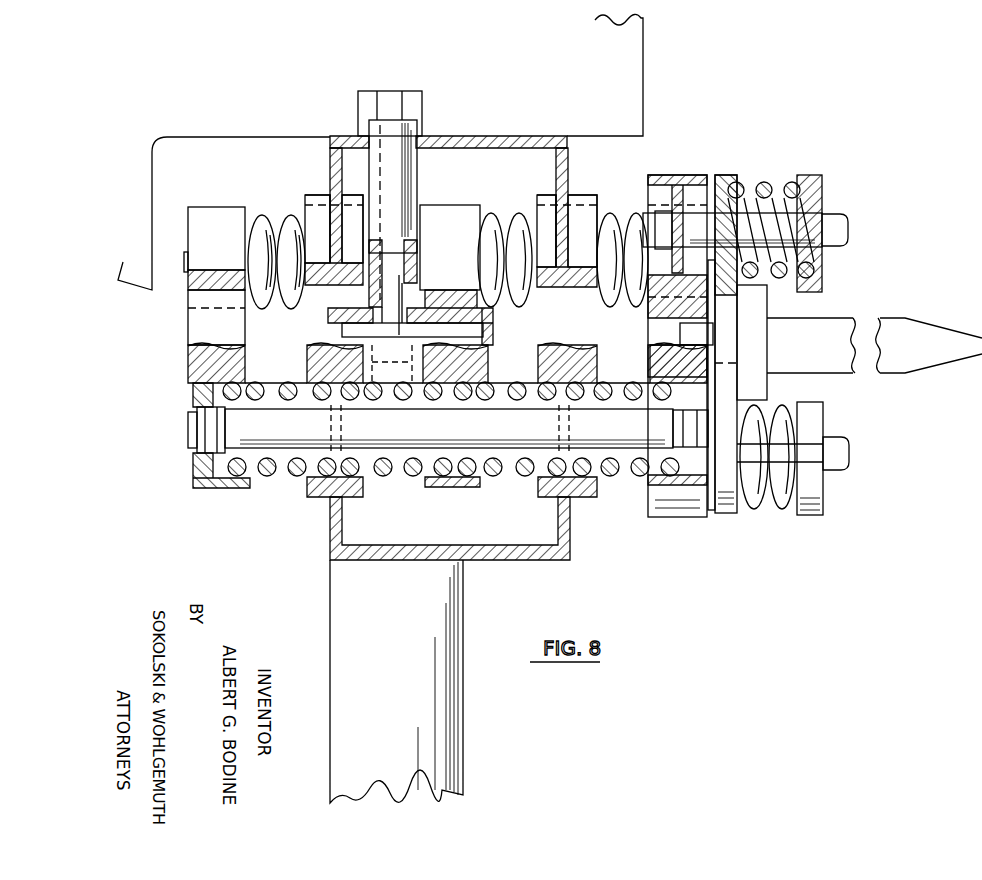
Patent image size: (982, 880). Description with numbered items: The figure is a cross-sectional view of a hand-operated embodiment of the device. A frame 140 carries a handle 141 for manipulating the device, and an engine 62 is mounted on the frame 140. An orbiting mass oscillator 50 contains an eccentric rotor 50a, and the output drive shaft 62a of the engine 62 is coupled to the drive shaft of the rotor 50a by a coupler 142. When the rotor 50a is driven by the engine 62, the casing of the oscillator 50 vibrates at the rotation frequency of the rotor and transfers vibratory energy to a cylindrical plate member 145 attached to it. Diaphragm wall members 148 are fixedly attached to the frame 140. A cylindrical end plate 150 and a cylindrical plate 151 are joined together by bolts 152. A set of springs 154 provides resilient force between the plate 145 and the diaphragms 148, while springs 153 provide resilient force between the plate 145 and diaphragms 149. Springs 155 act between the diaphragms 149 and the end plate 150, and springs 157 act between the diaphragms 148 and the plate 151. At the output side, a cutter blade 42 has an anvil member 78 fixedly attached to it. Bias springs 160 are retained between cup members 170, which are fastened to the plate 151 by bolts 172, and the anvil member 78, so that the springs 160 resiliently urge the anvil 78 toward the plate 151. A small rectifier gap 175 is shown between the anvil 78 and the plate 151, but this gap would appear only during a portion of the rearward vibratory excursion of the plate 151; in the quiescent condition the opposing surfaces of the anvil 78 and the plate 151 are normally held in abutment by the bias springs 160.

The cutter blade 42 is at (908, 337).
The orbiting mass oscillator 50 is at (500, 326).
The eccentric rotor 50a is at (342, 328).
The engine 62 is at (628, 42).
The output drive shaft 62a is at (403, 110).
The anvil member 78 is at (737, 293).
The frame 140 is at (477, 555).
The handle 141 is at (430, 692).
The coupler 142 is at (405, 170).
The cylindrical plate member 145 is at (448, 205).
The diaphragm wall member 148 is at (577, 197).
The diaphragm 149 is at (320, 195).
The cylindrical end plate 150 is at (193, 277).
The cylindrical plate 151 is at (683, 177).
The bolts 152 is at (275, 247).
The springs 153 is at (407, 470).
The springs 154 is at (522, 220).
The springs 155 is at (267, 227).
The springs 157 is at (608, 220).
The bias springs 160 is at (763, 183).
The cup members 170 is at (823, 182).
The bolts 172 is at (797, 227).
The rectifier gap 175 is at (713, 510).